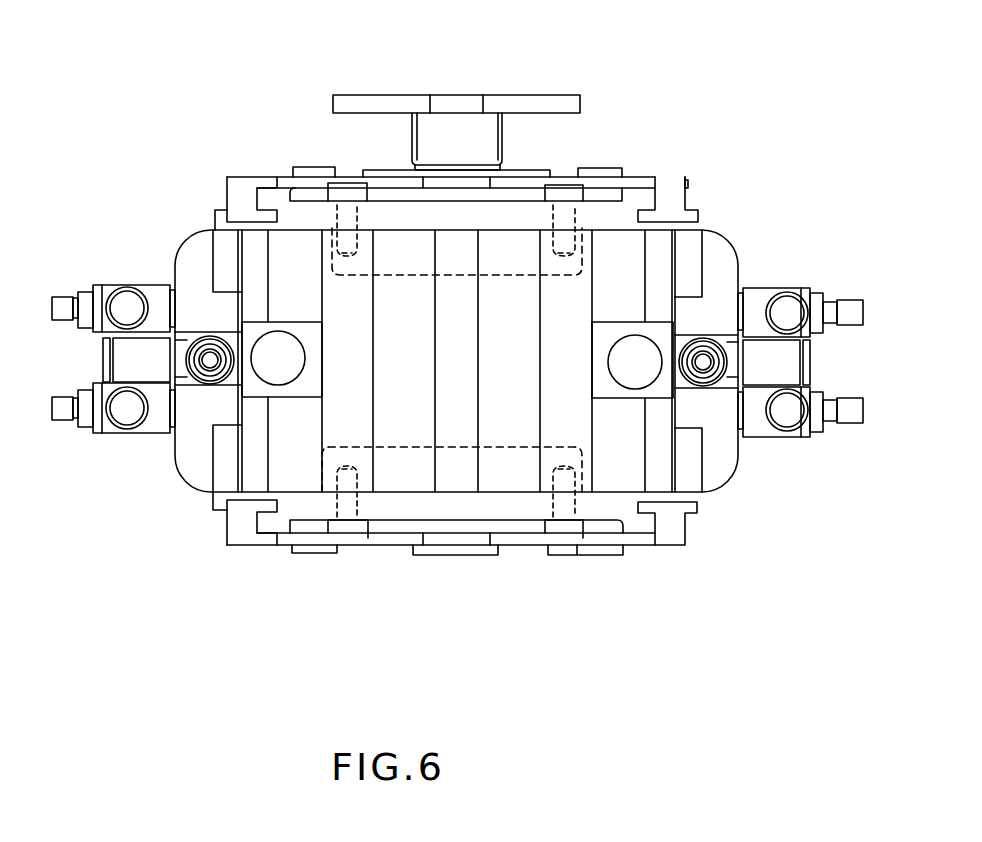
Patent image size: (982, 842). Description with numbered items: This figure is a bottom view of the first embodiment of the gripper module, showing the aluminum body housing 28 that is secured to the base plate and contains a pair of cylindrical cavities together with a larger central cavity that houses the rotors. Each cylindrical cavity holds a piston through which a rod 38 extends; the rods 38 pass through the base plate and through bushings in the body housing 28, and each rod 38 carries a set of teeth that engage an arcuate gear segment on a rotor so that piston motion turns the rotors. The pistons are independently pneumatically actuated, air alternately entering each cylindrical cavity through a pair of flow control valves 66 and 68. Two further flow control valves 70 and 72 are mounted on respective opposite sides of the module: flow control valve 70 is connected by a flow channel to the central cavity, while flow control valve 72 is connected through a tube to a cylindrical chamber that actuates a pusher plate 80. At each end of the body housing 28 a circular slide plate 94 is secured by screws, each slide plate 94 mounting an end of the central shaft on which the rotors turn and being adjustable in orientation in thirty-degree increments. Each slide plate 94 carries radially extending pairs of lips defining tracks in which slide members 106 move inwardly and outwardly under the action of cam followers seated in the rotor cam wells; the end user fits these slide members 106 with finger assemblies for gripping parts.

The body housing 28 is at (195, 462).
The rod 38 is at (280, 338).
The flow control valve 66 is at (157, 427).
The flow control valve 68 is at (127, 370).
The flow control valve 70 is at (148, 290).
The flow control valve 72 is at (762, 293).
The pusher plate 80 is at (562, 107).
The slide plate 94 is at (226, 212).
The slide member 106 is at (668, 186).